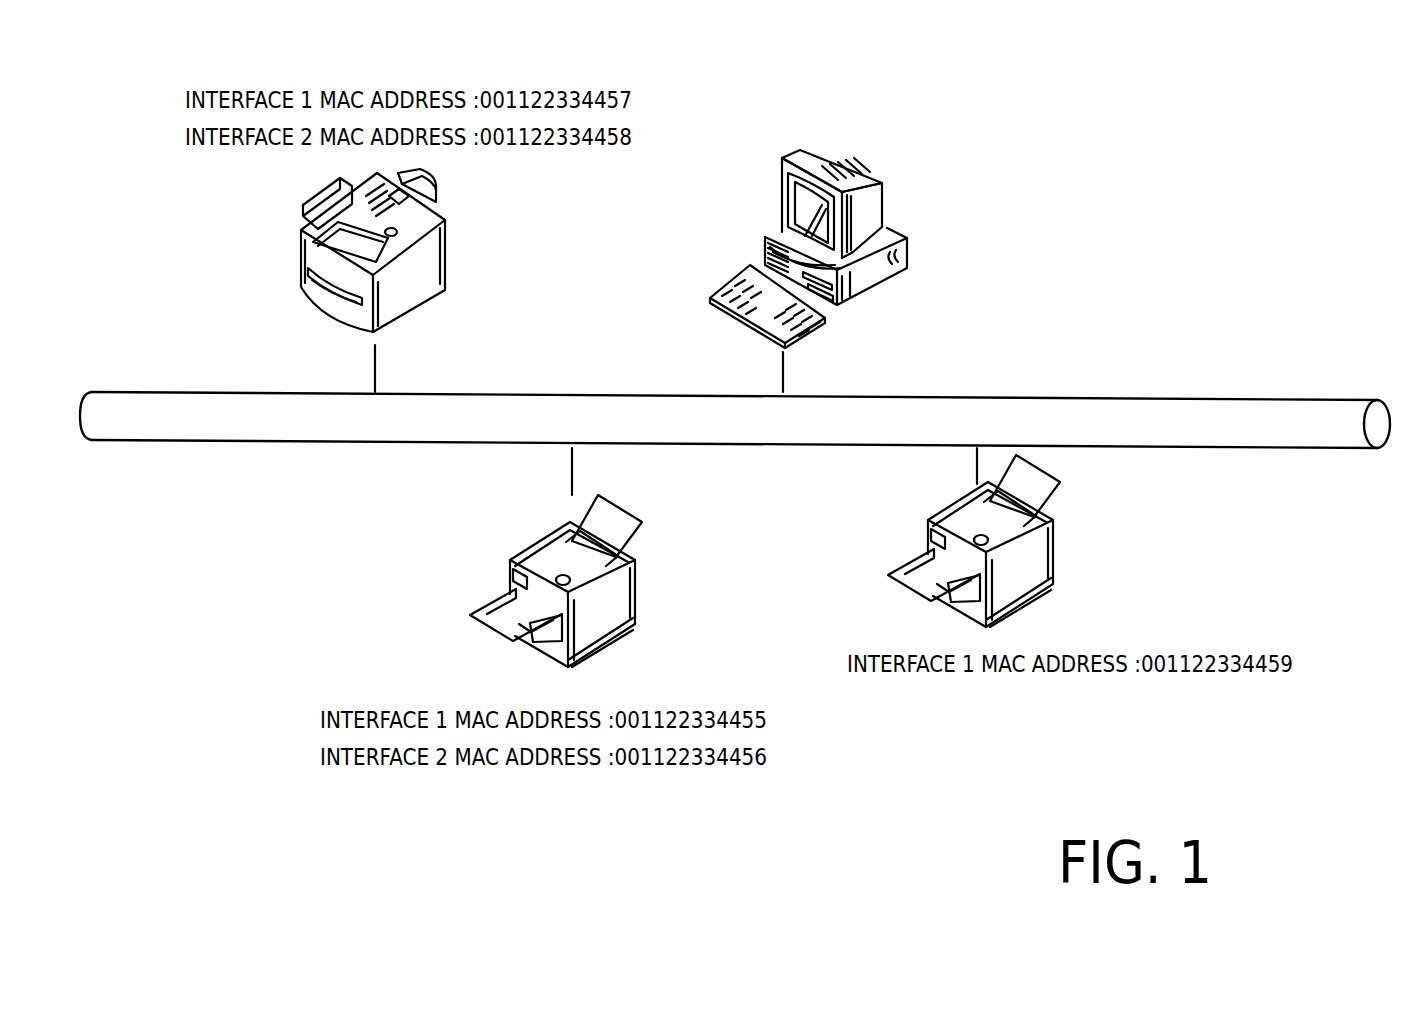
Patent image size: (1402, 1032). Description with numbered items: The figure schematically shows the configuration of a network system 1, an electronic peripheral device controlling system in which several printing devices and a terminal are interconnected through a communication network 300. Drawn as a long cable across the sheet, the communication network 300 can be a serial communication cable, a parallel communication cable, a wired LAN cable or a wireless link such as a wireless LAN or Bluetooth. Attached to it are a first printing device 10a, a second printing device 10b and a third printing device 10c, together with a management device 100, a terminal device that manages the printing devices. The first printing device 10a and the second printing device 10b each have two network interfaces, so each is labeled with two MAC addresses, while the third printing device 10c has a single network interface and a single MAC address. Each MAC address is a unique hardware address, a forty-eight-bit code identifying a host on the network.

The network system 1 is at (1069, 160).
The communication network 300 is at (175, 392).
The first printing device 10a is at (636, 585).
The second printing device 10b is at (447, 250).
The third printing device 10c is at (1054, 542).
The management device 100 is at (883, 208).